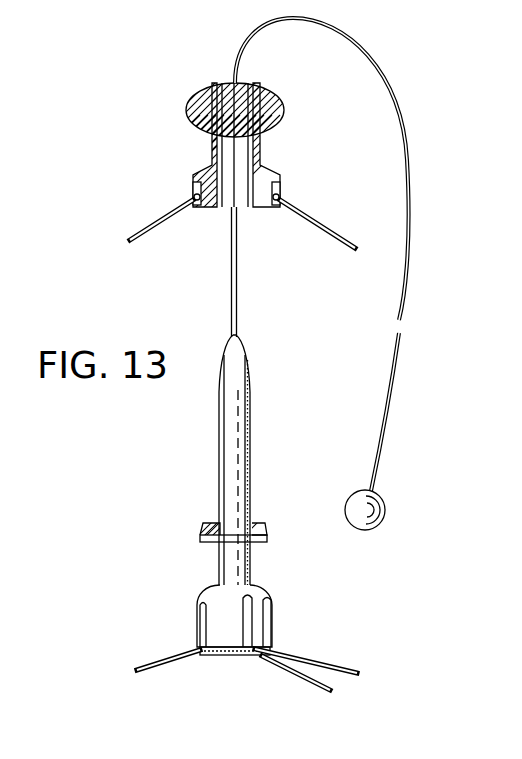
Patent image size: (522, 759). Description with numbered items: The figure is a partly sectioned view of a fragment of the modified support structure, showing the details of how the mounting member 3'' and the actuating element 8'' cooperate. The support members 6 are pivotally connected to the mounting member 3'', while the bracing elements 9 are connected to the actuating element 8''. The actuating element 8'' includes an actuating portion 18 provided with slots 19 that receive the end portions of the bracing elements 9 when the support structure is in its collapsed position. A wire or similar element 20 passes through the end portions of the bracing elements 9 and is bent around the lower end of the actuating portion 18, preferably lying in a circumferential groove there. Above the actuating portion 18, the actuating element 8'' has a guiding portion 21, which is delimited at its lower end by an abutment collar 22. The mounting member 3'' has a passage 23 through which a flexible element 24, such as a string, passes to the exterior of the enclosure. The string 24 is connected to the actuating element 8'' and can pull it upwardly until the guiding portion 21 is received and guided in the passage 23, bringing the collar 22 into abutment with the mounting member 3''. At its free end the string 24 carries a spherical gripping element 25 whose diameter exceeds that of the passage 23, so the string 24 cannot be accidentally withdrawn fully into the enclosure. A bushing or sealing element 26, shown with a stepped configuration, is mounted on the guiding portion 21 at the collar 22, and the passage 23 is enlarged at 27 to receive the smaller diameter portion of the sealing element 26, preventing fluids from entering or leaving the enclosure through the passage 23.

The mounting member 3'' is at (208, 142).
The support members 6 is at (145, 240).
The passage 23 is at (223, 206).
The enlarged portion of passage 27 is at (253, 206).
The flexible element 24 is at (380, 68).
The gripping element 25 is at (365, 518).
The guiding portion 21 is at (247, 465).
The actuating element 8'' is at (162, 508).
The abutment collar 22 is at (260, 532).
The sealing element 26 is at (200, 528).
The actuating portion 18 is at (218, 609).
The slots 19 is at (250, 617).
The wire 20 is at (225, 657).
The bracing elements 9 is at (158, 667).